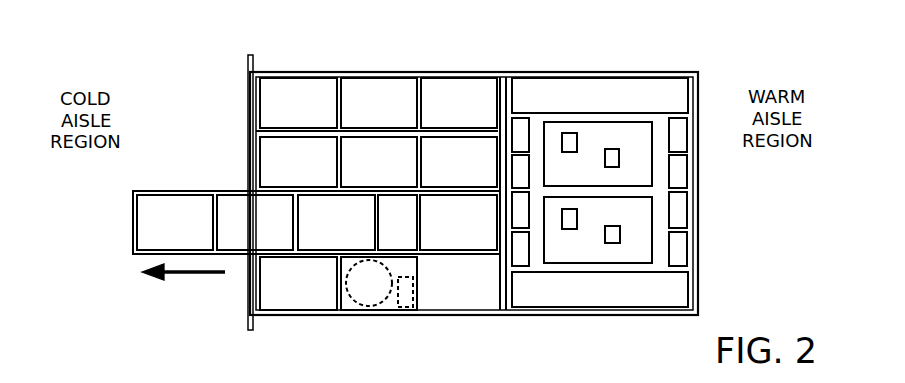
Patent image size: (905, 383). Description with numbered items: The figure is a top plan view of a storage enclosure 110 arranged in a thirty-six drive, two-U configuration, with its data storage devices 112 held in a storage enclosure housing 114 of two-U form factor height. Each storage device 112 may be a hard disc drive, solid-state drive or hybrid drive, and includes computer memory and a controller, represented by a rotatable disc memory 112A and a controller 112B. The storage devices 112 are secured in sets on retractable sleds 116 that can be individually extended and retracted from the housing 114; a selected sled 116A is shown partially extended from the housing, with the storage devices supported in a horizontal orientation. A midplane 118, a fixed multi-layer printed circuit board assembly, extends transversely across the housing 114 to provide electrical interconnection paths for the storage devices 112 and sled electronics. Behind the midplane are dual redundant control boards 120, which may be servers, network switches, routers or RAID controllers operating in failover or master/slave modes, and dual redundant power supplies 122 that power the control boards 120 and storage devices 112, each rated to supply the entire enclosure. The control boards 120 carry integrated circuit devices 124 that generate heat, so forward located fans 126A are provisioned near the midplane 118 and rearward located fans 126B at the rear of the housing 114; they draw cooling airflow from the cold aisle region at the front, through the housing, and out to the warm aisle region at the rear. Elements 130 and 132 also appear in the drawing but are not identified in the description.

The storage enclosure 110 is at (227, 52).
The data storage device 112 is at (283, 93).
The rotatable disc memory 112A is at (370, 307).
The controller 112B is at (410, 317).
The storage enclosure housing 114 is at (437, 72).
The retractable sled 116 is at (350, 78).
The selected sled 116A is at (168, 191).
The midplane 118 is at (505, 88).
The control board 120 is at (627, 135).
The power supply 122 is at (668, 85).
The integrated circuit device 124 is at (572, 133).
The forward located fan 126A is at (518, 113).
The rearward located fan 126B is at (687, 170).
The front panel 130 is at (248, 302).
The enclosure 132 is at (700, 257).